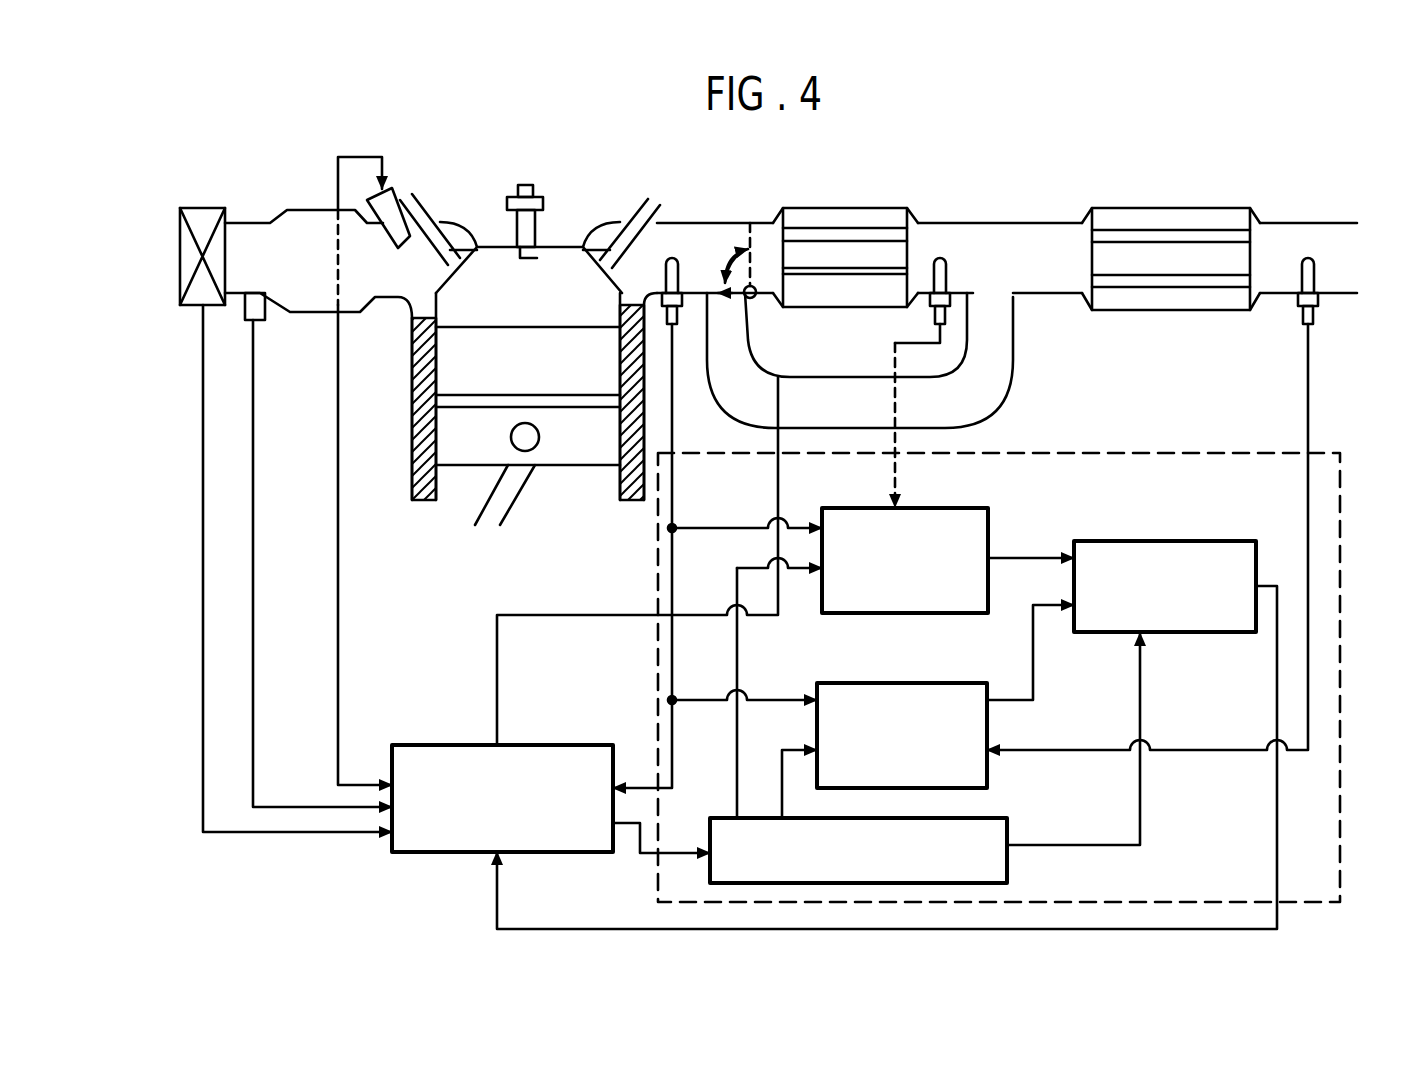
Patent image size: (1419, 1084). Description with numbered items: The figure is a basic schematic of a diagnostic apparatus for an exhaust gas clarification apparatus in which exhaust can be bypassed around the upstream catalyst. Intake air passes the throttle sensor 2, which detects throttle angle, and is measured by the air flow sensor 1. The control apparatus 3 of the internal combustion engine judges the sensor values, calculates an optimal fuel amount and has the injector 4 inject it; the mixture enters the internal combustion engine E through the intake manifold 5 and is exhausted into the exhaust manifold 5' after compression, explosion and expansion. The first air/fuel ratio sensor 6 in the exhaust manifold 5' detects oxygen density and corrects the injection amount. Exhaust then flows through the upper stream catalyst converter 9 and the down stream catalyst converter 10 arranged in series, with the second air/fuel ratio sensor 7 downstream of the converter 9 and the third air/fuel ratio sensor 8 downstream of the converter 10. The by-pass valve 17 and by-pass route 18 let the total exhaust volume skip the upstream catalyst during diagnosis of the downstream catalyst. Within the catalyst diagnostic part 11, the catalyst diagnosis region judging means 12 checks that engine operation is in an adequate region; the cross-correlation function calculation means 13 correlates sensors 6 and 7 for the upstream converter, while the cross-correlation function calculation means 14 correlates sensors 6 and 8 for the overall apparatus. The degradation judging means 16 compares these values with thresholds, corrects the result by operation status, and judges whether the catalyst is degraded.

The air flow sensor 1 is at (205, 208).
The throttle sensor 2 is at (268, 318).
The control apparatus of the internal combustion engine 3 is at (415, 745).
The injector 4 is at (392, 188).
The intake manifold 5 is at (318, 289).
The exhaust manifold 5' is at (1007, 235).
The first air/fuel ratio sensor 6 is at (676, 328).
The second air/fuel ratio sensor 7 is at (918, 317).
The third air/fuel ratio sensor 8 is at (1320, 318).
The upper stream catalyst converter 9 is at (848, 207).
The down stream catalyst converter 10 is at (1140, 207).
The catalyst diagnostic part 11 is at (1343, 568).
The catalyst diagnosis region judging means 12 is at (1000, 818).
The cross-correlation function calculation means 13 is at (972, 508).
The cross-correlation function calculation means 14 is at (972, 683).
The degradation judging means 16 is at (1165, 541).
The by-pass valve 17 is at (760, 302).
The by-pass route 18 is at (982, 373).
The internal combustion engine E is at (618, 490).